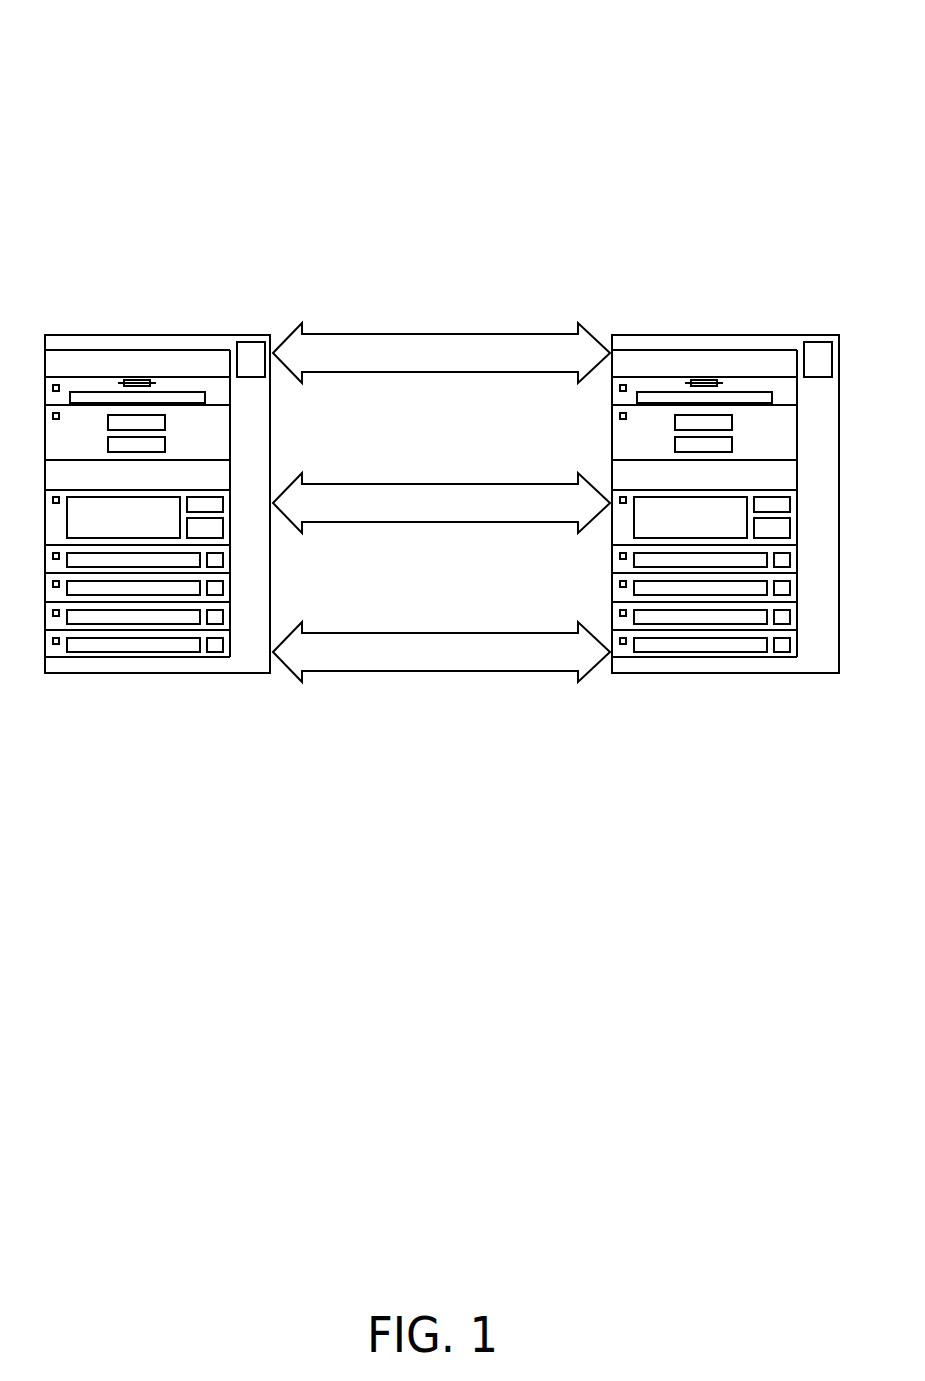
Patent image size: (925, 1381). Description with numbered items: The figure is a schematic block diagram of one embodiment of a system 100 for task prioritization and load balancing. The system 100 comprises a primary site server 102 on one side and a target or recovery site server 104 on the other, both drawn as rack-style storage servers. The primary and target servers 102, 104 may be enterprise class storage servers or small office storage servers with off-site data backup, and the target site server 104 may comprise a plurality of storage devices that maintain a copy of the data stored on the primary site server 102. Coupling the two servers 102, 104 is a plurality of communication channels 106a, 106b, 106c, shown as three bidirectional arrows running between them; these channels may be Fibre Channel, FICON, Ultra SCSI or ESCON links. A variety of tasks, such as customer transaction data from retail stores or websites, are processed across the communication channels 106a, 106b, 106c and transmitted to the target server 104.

The system 100 is at (114, 76).
The primary site server 102 is at (155, 334).
The target site server 104 is at (710, 334).
The communication channel 106a is at (447, 334).
The communication channel 106b is at (447, 484).
The communication channel 106c is at (447, 633).